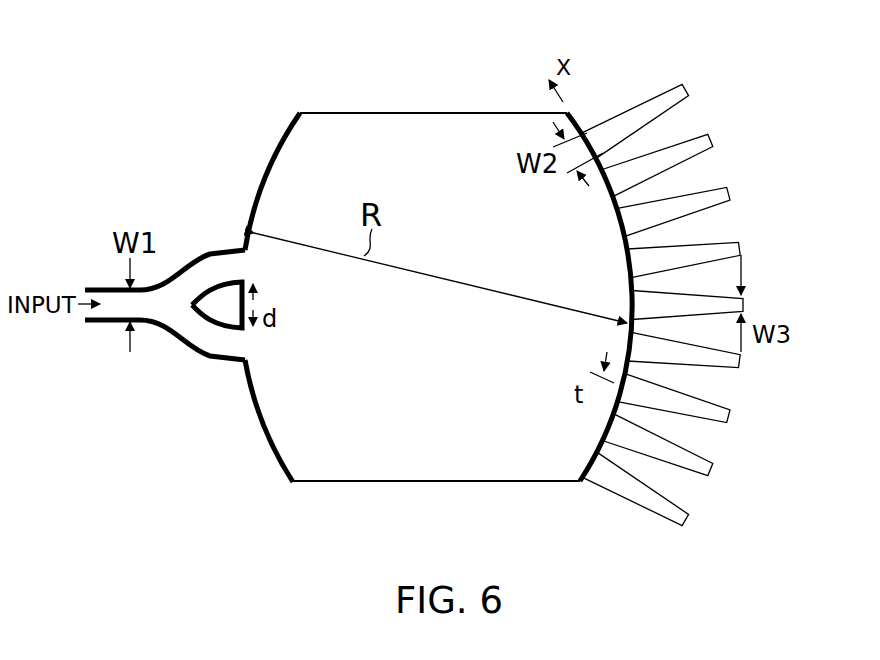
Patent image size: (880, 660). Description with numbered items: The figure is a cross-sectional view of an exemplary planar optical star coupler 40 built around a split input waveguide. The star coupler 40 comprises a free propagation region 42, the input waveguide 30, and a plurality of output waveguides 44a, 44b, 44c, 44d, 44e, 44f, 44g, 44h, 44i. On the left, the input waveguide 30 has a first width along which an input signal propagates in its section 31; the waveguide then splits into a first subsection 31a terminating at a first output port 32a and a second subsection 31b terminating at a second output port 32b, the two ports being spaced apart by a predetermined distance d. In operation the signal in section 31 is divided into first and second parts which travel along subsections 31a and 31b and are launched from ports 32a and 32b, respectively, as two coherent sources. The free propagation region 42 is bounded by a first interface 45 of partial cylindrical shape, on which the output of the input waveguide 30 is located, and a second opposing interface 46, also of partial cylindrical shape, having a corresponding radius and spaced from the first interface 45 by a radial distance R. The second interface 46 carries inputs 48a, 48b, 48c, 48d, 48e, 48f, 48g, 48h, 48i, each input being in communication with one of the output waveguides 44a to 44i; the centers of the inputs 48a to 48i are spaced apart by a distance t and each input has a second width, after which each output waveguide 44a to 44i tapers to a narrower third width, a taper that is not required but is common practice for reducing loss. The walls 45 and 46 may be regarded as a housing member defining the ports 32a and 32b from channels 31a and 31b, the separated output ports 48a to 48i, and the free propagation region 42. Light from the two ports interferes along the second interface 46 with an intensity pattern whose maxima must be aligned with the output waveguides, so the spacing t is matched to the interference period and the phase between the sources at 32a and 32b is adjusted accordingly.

The input waveguide 30 is at (108, 296).
The section 31 is at (113, 317).
The first subsection 31a is at (202, 278).
The second subsection 31b is at (205, 340).
The first output port 32a is at (235, 267).
The second output port 32b is at (230, 345).
The planar optical star coupler 40 is at (438, 266).
The free propagation region 42 is at (404, 135).
The output waveguide 44a is at (655, 512).
The output waveguide 44b is at (700, 478).
The output waveguide 44c is at (727, 425).
The output waveguide 44d is at (733, 369).
The output waveguide 44e is at (746, 297).
The output waveguide 44f is at (738, 238).
The output waveguide 44g is at (728, 183).
The output waveguide 44h is at (694, 130).
The output waveguide 44i is at (653, 98).
The first interface 45 is at (275, 153).
The second opposing interface 46 is at (560, 117).
The input 48a is at (585, 457).
The input 48b is at (586, 422).
The input 48c is at (600, 385).
The input 48d is at (628, 350).
The input 48e is at (630, 300).
The input 48f is at (627, 250).
The input 48g is at (620, 218).
The input 48h is at (596, 165).
The input 48i is at (556, 140).